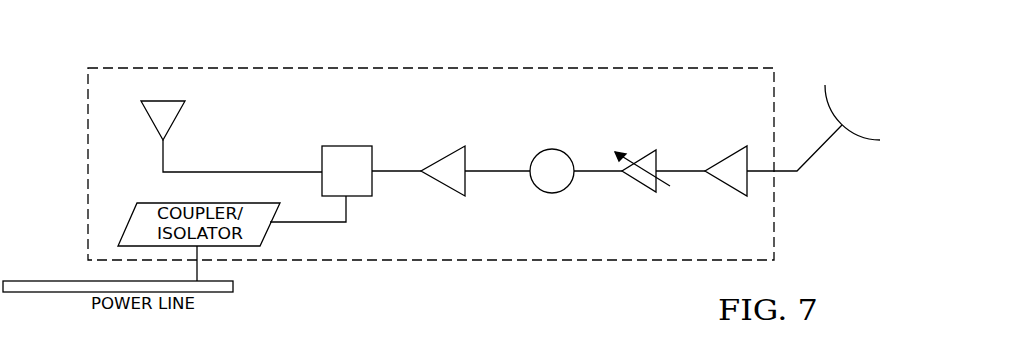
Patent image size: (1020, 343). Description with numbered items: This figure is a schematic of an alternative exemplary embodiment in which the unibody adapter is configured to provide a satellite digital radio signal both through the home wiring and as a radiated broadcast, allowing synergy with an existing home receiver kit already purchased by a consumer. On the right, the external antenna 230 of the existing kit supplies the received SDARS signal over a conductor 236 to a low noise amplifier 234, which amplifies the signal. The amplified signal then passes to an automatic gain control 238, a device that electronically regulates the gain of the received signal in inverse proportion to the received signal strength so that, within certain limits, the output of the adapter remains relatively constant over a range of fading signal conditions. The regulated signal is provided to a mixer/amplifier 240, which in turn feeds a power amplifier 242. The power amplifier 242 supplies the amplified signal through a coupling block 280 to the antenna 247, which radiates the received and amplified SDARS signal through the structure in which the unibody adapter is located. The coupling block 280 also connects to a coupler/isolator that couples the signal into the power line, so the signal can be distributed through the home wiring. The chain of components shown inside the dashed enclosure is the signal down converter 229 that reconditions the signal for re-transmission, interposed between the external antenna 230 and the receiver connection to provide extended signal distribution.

The signal down converter 229 is at (606, 260).
The antenna 247 is at (150, 117).
The coupling box 280 is at (336, 146).
The power amplifier 242 is at (440, 153).
The mixer/amplifier 240 is at (546, 149).
The automatic gain control 238 is at (643, 160).
The low noise amplifier 234 is at (733, 152).
The conductor 236 is at (822, 141).
The external antenna 230 is at (838, 111).